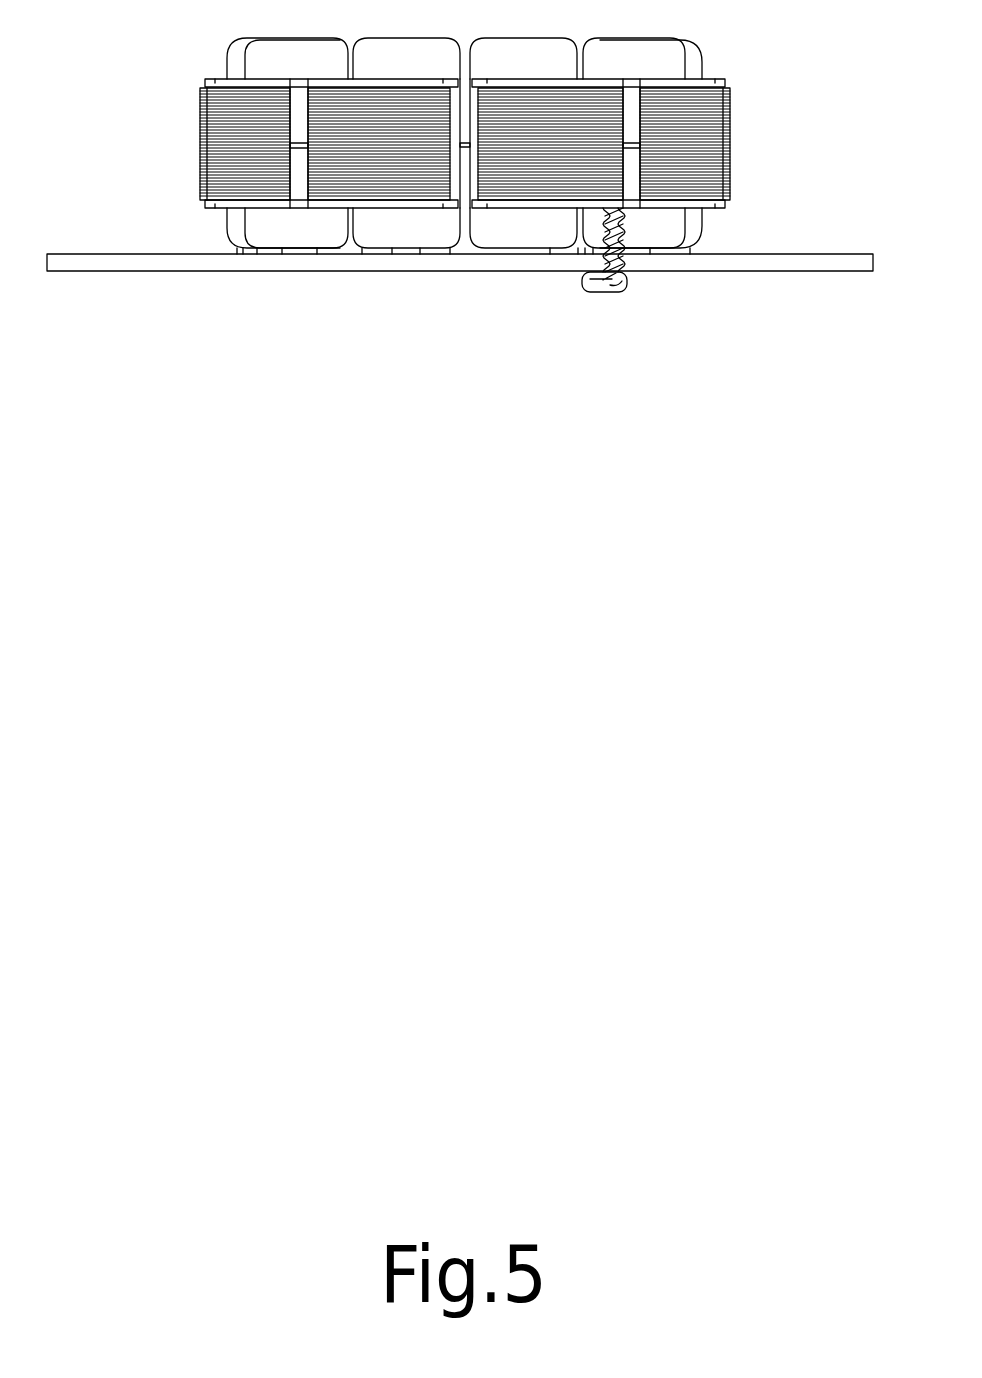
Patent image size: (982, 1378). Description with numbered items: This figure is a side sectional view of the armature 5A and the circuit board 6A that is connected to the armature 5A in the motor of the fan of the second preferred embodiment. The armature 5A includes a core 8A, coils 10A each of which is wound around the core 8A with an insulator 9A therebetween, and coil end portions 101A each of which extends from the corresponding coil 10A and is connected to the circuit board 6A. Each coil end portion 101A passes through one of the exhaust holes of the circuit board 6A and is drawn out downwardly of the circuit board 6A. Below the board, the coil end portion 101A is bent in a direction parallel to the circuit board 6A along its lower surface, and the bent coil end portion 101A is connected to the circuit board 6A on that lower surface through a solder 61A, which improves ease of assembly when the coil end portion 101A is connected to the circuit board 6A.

The armature 5A is at (777, 118).
The circuit board 6A is at (803, 262).
The core 8A is at (245, 167).
The insulator 9A is at (230, 80).
The coil 10A is at (670, 233).
The solder 61A is at (583, 292).
The coil end portion 101A is at (628, 277).